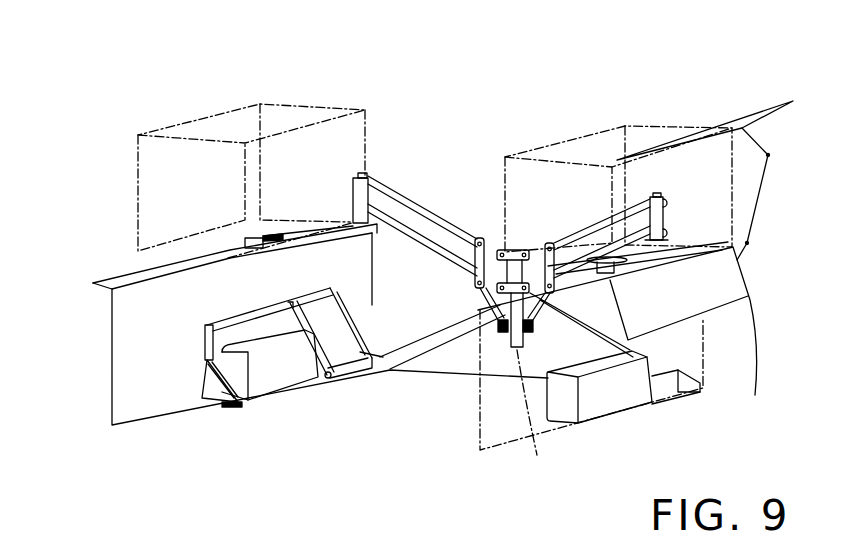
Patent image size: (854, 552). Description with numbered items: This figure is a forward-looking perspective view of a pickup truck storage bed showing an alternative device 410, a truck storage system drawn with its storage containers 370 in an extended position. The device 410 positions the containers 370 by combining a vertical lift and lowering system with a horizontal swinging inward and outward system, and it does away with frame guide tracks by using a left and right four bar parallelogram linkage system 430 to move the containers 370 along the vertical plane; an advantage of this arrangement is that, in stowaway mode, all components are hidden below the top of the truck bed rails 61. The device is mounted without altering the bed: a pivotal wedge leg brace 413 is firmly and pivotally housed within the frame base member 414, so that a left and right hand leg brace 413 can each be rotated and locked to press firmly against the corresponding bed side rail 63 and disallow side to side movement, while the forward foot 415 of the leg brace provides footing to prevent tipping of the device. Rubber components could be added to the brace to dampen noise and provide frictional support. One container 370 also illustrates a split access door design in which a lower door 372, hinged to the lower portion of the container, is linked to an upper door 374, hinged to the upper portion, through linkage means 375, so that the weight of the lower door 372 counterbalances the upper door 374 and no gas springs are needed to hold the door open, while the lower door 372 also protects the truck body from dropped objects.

The alternative device 410 is at (150, 70).
The storage container 370 is at (150, 135).
The truck bed rail 61 is at (118, 280).
The bed side rail 63 is at (128, 397).
The four bar parallelogram linkage system 430 is at (397, 188).
The upper door 374 is at (725, 122).
The linkage means 375 is at (762, 208).
The lower door 372 is at (715, 322).
The pivotal wedge leg brace 413 is at (207, 343).
The frame base member 414 is at (350, 380).
The forward foot 415 is at (232, 407).